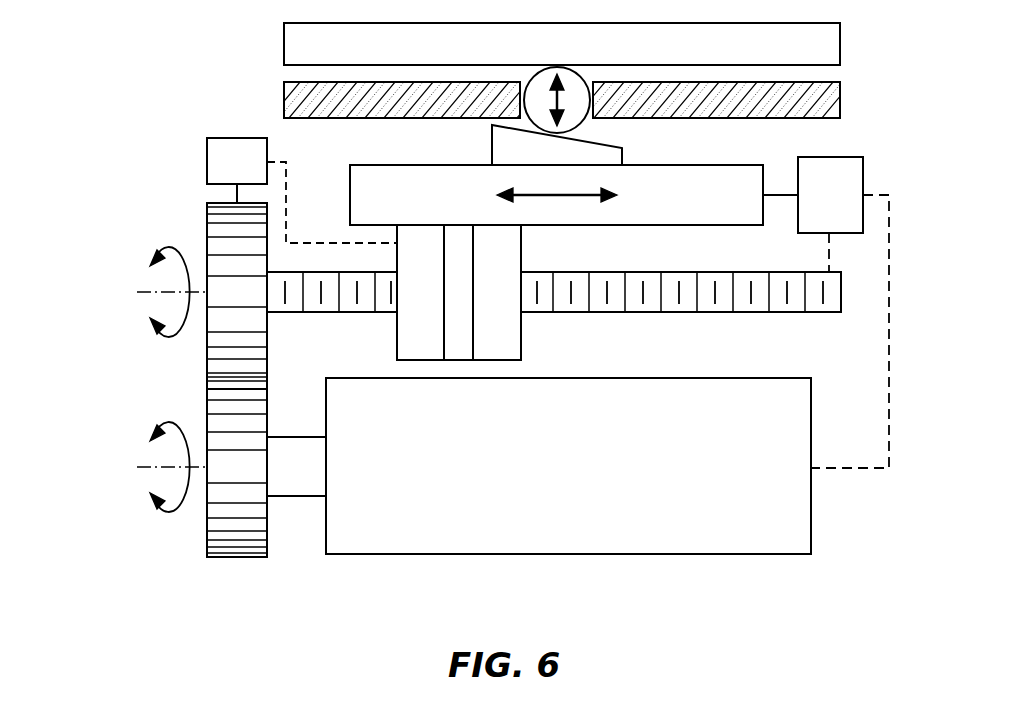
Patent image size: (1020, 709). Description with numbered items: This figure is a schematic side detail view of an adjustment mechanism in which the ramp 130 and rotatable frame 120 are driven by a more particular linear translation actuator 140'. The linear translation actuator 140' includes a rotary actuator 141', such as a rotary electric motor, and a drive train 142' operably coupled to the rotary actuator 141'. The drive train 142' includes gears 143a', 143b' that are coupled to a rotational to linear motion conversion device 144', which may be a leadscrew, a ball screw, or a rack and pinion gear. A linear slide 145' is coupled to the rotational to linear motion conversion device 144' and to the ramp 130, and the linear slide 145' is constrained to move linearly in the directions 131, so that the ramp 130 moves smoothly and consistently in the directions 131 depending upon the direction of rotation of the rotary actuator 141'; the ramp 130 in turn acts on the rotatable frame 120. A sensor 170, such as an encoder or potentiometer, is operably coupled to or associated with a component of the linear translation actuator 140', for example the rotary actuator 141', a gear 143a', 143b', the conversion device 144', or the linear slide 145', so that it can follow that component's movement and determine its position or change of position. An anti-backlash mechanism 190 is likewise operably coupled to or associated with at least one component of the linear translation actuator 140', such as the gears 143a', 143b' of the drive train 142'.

The rotatable frame 120 is at (843, 45).
The ramp 130 is at (600, 133).
The directions 131 is at (559, 197).
The linear translation actuator 140' is at (455, 321).
The rotary actuator 141' is at (568, 466).
The drive train 142' is at (174, 380).
The gear 143a' is at (179, 492).
The gear 143b' is at (179, 277).
The rotational to linear motion conversion device 144' is at (332, 188).
The linear slide 145' is at (584, 174).
The sensor 170 is at (826, 312).
The anti-backlash mechanism 190 is at (237, 170).